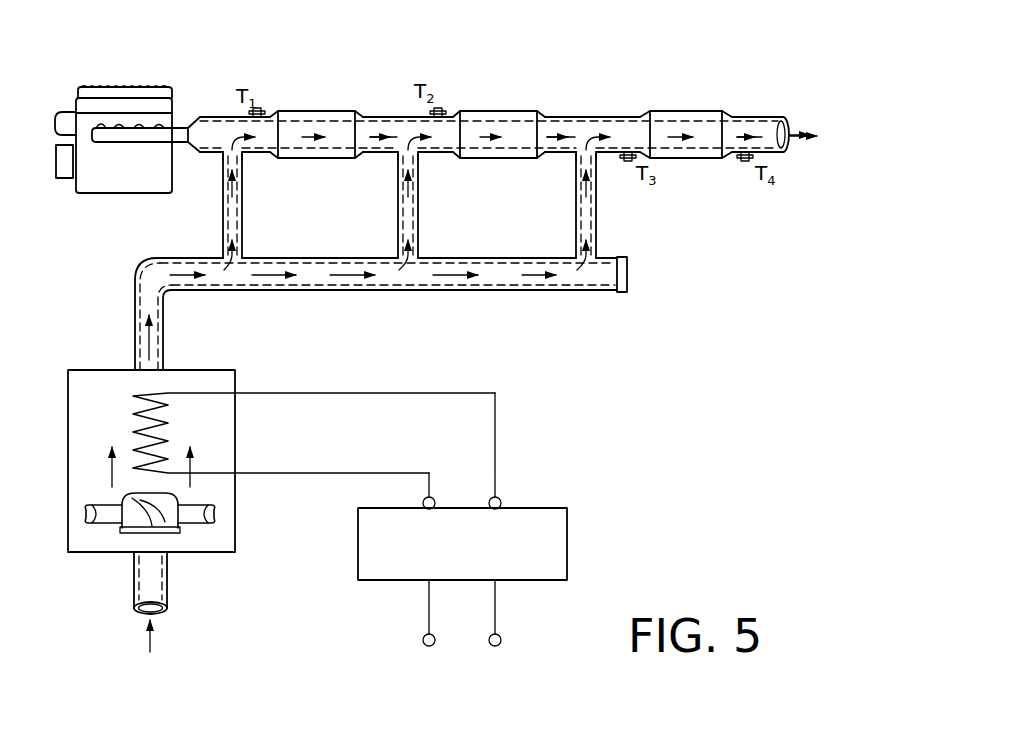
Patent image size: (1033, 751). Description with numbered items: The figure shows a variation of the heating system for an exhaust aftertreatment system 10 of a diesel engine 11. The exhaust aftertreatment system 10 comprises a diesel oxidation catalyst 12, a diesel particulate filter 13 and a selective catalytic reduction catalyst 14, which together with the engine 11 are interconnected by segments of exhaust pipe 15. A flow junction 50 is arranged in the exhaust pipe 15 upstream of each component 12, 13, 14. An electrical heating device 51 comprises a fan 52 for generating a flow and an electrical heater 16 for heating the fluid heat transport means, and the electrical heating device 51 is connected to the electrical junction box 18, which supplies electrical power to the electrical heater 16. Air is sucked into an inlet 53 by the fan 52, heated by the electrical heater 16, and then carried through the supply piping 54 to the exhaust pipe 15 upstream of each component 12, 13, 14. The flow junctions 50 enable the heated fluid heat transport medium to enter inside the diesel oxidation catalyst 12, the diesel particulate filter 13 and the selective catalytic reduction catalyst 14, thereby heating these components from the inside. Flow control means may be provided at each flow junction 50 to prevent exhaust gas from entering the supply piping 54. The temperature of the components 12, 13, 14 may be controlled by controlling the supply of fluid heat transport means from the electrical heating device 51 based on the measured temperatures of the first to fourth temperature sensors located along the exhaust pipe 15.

The exhaust aftertreatment system 10 is at (705, 428).
The diesel engine 11 is at (120, 103).
The diesel oxidation catalyst 12 is at (318, 111).
The diesel particulate filter 13 is at (502, 111).
The selective catalytic reduction catalyst 14 is at (687, 111).
The exhaust pipe 15 is at (217, 115).
The electrical heater 16 is at (133, 415).
The electrical junction box 18 is at (548, 502).
The flow junction 50 is at (211, 165).
The electrical heating device 51 is at (247, 375).
The fan 52 is at (167, 530).
The inlet 53 is at (130, 580).
The supply piping 54 is at (245, 193).